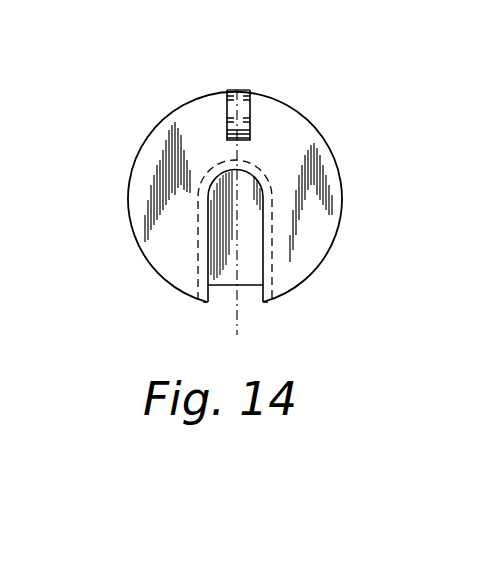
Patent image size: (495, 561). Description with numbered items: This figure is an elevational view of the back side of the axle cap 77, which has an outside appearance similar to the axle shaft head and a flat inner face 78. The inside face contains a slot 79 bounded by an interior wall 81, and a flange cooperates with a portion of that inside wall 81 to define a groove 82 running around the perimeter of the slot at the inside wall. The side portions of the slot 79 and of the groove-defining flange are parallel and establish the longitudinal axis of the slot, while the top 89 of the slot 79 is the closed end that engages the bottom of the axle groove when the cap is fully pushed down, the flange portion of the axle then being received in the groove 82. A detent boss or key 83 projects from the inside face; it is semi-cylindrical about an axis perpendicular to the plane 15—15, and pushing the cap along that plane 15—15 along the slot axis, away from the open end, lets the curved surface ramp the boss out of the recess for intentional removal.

The section plane 15— 15 is at (185, 40).
The axle cap 77 is at (366, 131).
The flat inner face 78 is at (322, 222).
The slot 79 is at (252, 305).
The interior wall 81 is at (255, 243).
The groove 82 is at (268, 218).
The detent boss or key 83 is at (228, 108).
The top of the slot 89 is at (232, 170).